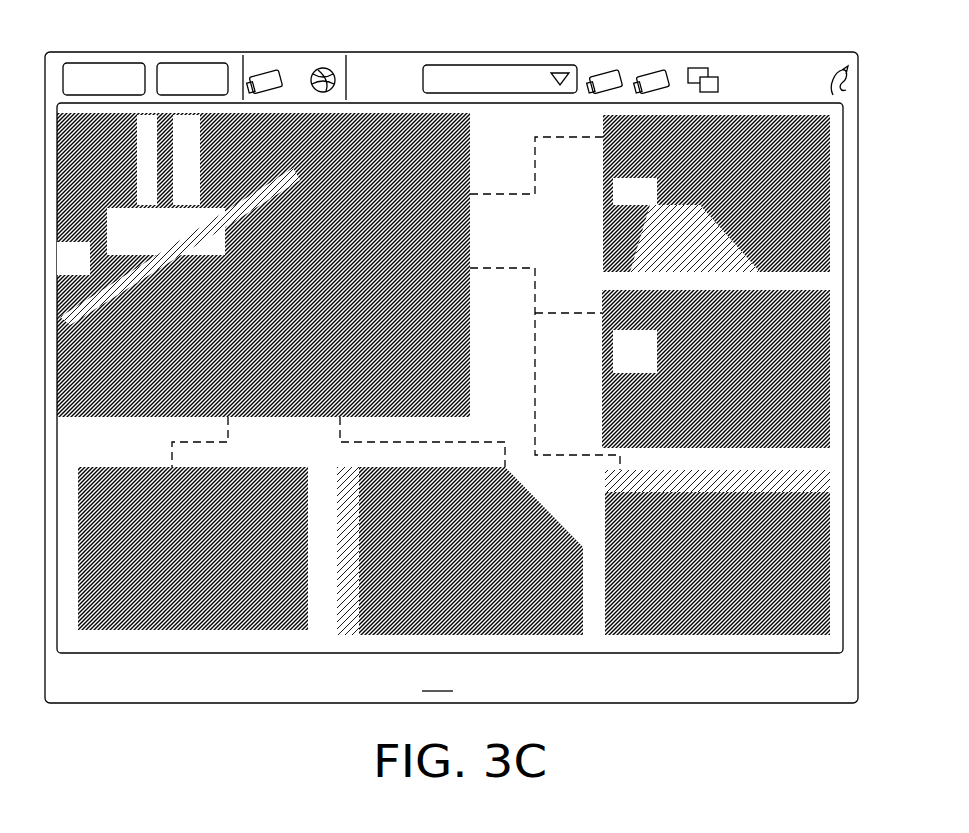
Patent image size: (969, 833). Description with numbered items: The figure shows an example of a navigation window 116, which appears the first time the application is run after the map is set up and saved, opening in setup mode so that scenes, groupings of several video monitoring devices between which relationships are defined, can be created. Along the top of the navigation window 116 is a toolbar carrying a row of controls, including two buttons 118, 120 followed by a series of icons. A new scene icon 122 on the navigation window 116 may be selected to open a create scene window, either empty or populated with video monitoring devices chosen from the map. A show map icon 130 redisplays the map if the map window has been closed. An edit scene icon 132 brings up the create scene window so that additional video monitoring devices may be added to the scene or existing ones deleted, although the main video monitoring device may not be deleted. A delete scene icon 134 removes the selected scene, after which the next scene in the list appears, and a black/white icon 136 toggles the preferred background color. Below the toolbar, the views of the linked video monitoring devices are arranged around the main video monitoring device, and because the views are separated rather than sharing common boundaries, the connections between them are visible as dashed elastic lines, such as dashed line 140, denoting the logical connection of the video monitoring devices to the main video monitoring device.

The navigation window 116 is at (451, 377).
The setup button 118 is at (100, 63).
The play button 120 is at (190, 63).
The new scene icon 122 is at (268, 68).
The show map icon 130 is at (328, 68).
The edit scene icon 132 is at (607, 68).
The delete scene icon 134 is at (652, 68).
The black/white icon 136 is at (709, 68).
The dashed line 140 is at (468, 163).